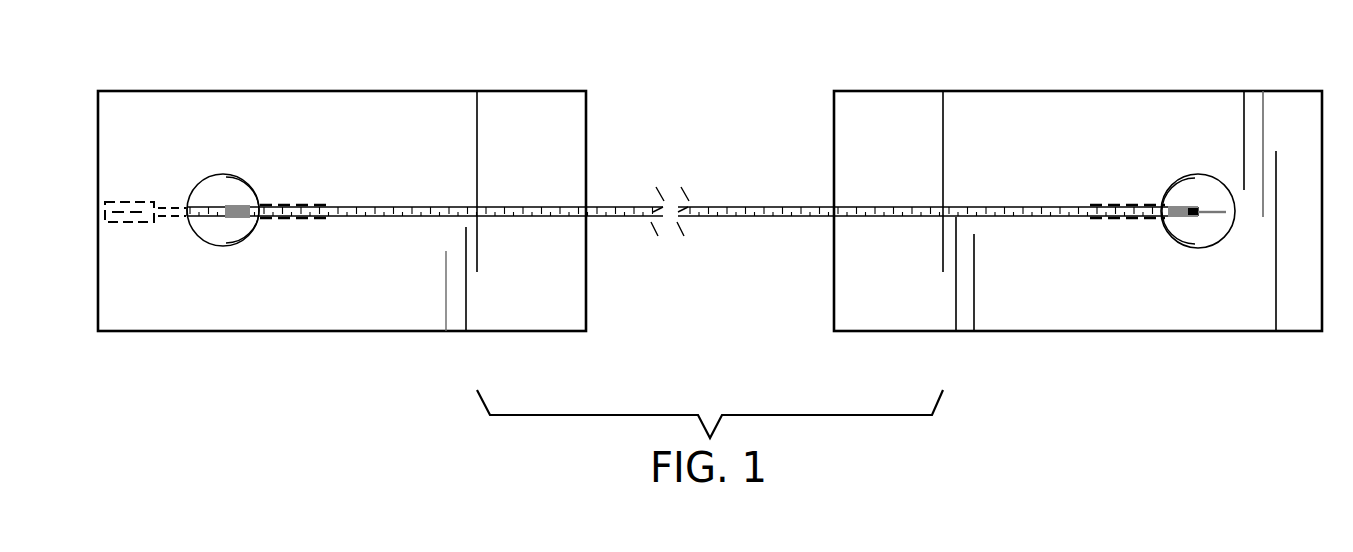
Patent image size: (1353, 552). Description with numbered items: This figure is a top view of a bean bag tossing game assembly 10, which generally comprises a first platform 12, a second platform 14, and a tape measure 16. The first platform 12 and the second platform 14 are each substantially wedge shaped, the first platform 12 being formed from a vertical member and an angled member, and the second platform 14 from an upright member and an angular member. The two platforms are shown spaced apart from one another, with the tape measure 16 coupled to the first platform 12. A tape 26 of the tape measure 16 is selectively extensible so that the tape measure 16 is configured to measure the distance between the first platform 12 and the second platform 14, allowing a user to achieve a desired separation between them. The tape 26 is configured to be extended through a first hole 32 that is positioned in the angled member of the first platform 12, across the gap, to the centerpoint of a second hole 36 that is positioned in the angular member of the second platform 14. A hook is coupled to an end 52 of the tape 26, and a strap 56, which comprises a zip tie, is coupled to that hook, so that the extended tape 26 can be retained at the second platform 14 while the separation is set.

The bean bag tossing game assembly 10 is at (810, 82).
The first platform 12 is at (450, 87).
The second platform 14 is at (1005, 88).
The tape measure 16 is at (98, 212).
The tape 26 is at (745, 218).
The first hole 32 is at (222, 248).
The second hole 36 is at (1173, 243).
The end 52 is at (1198, 212).
The strap 56 is at (1225, 212).